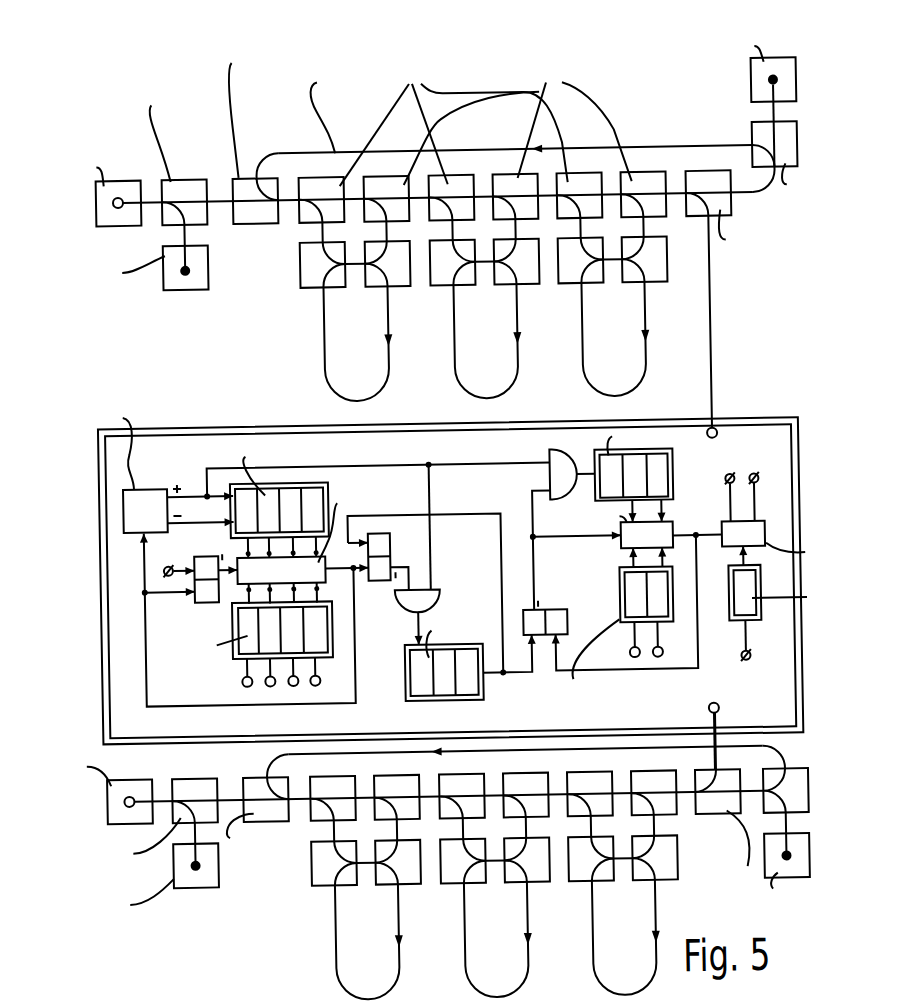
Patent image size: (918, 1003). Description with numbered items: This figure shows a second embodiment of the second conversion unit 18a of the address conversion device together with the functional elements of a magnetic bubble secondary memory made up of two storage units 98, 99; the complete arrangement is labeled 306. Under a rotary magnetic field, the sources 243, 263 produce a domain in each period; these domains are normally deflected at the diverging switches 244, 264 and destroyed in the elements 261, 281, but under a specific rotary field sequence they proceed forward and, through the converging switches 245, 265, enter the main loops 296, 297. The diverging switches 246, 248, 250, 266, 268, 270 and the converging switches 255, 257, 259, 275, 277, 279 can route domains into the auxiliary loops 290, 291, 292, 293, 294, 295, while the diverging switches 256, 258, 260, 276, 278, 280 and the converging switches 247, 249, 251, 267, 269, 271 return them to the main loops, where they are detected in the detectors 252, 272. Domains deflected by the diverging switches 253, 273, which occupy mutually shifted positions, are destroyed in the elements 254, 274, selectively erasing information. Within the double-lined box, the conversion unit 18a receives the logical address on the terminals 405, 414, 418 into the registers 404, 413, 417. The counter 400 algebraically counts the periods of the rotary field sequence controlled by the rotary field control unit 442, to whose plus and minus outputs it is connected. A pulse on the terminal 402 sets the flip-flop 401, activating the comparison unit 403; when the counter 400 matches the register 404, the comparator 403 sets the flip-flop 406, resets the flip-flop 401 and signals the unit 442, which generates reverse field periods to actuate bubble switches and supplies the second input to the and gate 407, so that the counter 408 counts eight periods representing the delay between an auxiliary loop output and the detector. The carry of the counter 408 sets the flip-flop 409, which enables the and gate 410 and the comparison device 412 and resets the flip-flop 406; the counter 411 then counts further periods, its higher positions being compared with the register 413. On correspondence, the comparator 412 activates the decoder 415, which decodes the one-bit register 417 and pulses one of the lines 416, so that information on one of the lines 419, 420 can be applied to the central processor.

The storage unit 98 is at (199, 394).
The source 243 is at (121, 182).
The diverging switch 244 is at (184, 182).
The converging switch 245 is at (247, 173).
The diverging switch 246 is at (309, 171).
The converging switch 247 is at (391, 183).
The diverging switch 248 is at (453, 179).
The converging switch 249 is at (504, 185).
The diverging switch 250 is at (573, 178).
The converging switch 251 is at (631, 179).
The detector 252 is at (708, 180).
The diverging switch 253 is at (799, 159).
The destruction element 254 is at (799, 95).
The converging switch 255 is at (300, 296).
The diverging switch 256 is at (373, 291).
The converging switch 257 is at (436, 290).
The diverging switch 258 is at (501, 292).
The switch 259 is at (564, 293).
The diverging switch 260 is at (628, 294).
The destruction element 261 is at (184, 291).
The auxiliary loop 290 is at (322, 376).
The auxiliary loop 291 is at (457, 370).
The auxiliary loop 292 is at (586, 372).
The main loop 296 is at (361, 144).
The second conversion unit 18a is at (797, 664).
The rotary field control unit 442 is at (144, 490).
The counter 400 is at (324, 494).
The flip-flop 401 is at (192, 605).
The terminal 402 is at (163, 567).
The comparison unit 403 is at (317, 548).
The register 404 is at (231, 660).
The terminals 405 is at (262, 689).
The flip-flop 406 is at (401, 545).
The and gate 407 is at (433, 601).
The counter 408 is at (398, 696).
The flip-flop 409 is at (550, 617).
The and gate 410 is at (544, 458).
The counter 411 is at (668, 487).
The comparison device 412 is at (632, 526).
The register 413 is at (613, 579).
The terminals 414 is at (623, 657).
The decoder 415 is at (793, 540).
The lines 416 is at (753, 485).
The register 417 is at (757, 619).
The terminal 418 is at (739, 673).
The line 419 is at (713, 447).
The line 420 is at (700, 718).
The storage unit 99 is at (213, 972).
The source 263 is at (132, 781).
The diverging switch 264 is at (183, 781).
The converging switch 265 is at (230, 782).
The diverging switch 266 is at (321, 781).
The converging switch 267 is at (366, 782).
The diverging switch 268 is at (431, 783).
The converging switch 269 is at (496, 784).
The diverging switch 270 is at (561, 785).
The converging switch 271 is at (627, 783).
The detector 272 is at (704, 826).
The diverging switch 273 is at (799, 802).
The destruction element 274 is at (798, 870).
The converging switch 275 is at (306, 891).
The diverging switch 276 is at (368, 893).
The converging switch 277 is at (434, 893).
The diverging switch 278 is at (498, 894).
The converging switch 279 is at (589, 889).
The diverging switch 280 is at (656, 892).
The destruction element 281 is at (176, 892).
The auxiliary loop 293 is at (328, 977).
The auxiliary loop 294 is at (452, 988).
The auxiliary loop 295 is at (580, 970).
The main loop 297 is at (452, 757).
The bubble domain system 306 is at (463, 511).